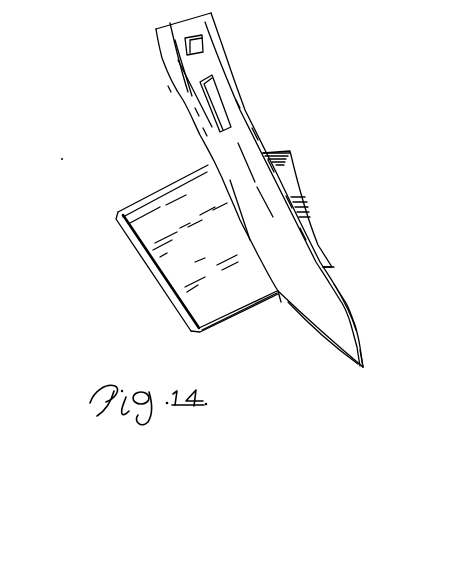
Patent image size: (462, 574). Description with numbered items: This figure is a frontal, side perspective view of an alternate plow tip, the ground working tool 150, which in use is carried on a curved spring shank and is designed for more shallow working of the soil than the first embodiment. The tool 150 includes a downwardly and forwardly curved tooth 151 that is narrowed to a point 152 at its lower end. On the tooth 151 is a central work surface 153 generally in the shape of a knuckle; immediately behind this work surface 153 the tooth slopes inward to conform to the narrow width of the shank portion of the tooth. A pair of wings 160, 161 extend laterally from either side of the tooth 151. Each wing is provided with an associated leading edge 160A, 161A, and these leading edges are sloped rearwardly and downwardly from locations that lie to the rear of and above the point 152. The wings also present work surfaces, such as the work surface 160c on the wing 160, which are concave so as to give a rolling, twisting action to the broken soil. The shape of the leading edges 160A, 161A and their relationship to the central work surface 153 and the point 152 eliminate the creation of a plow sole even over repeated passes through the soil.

The ground working tool 150 is at (266, 92).
The tooth 151 is at (250, 133).
The point 152 is at (363, 367).
The central work surface 153 is at (353, 302).
The wing 160 is at (152, 279).
The leading edge 160A is at (237, 318).
The work surface 160c is at (212, 251).
The wing 161 is at (295, 195).
The leading edge 161A is at (332, 267).